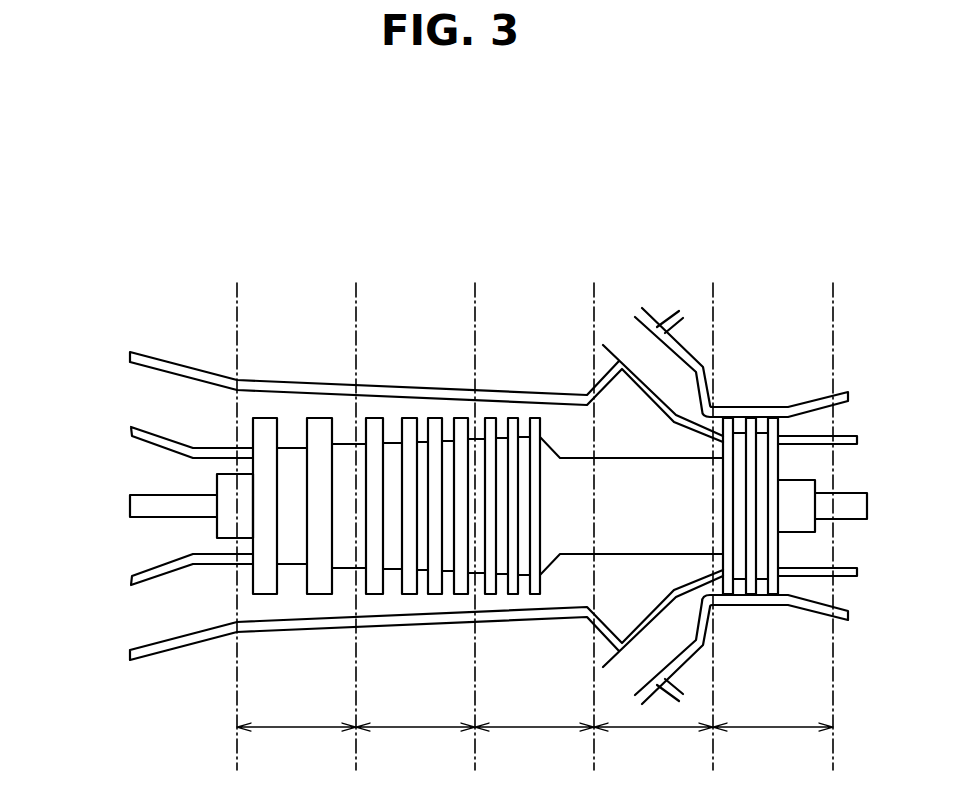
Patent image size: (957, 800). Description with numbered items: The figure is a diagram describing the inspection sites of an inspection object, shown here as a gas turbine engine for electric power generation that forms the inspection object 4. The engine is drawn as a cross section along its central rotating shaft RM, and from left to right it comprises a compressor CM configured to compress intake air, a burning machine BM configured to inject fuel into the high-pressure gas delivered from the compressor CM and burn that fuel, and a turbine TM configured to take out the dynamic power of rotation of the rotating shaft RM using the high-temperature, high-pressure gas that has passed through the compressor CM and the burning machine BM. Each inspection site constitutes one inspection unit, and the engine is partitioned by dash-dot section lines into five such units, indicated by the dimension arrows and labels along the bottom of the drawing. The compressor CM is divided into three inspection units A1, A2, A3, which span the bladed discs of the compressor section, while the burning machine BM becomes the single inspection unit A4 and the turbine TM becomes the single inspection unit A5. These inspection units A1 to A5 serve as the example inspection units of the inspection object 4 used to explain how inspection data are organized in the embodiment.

The inspection object 4 is at (153, 271).
The rotating shaft RM is at (150, 495).
The compressor CM is at (405, 277).
The burning machine BM is at (648, 297).
The turbine TM is at (769, 360).
The inspection unit A1 is at (296, 744).
The inspection unit A2 is at (415, 744).
The inspection unit A3 is at (534, 744).
The inspection unit A4 is at (653, 744).
The inspection unit A5 is at (773, 744).